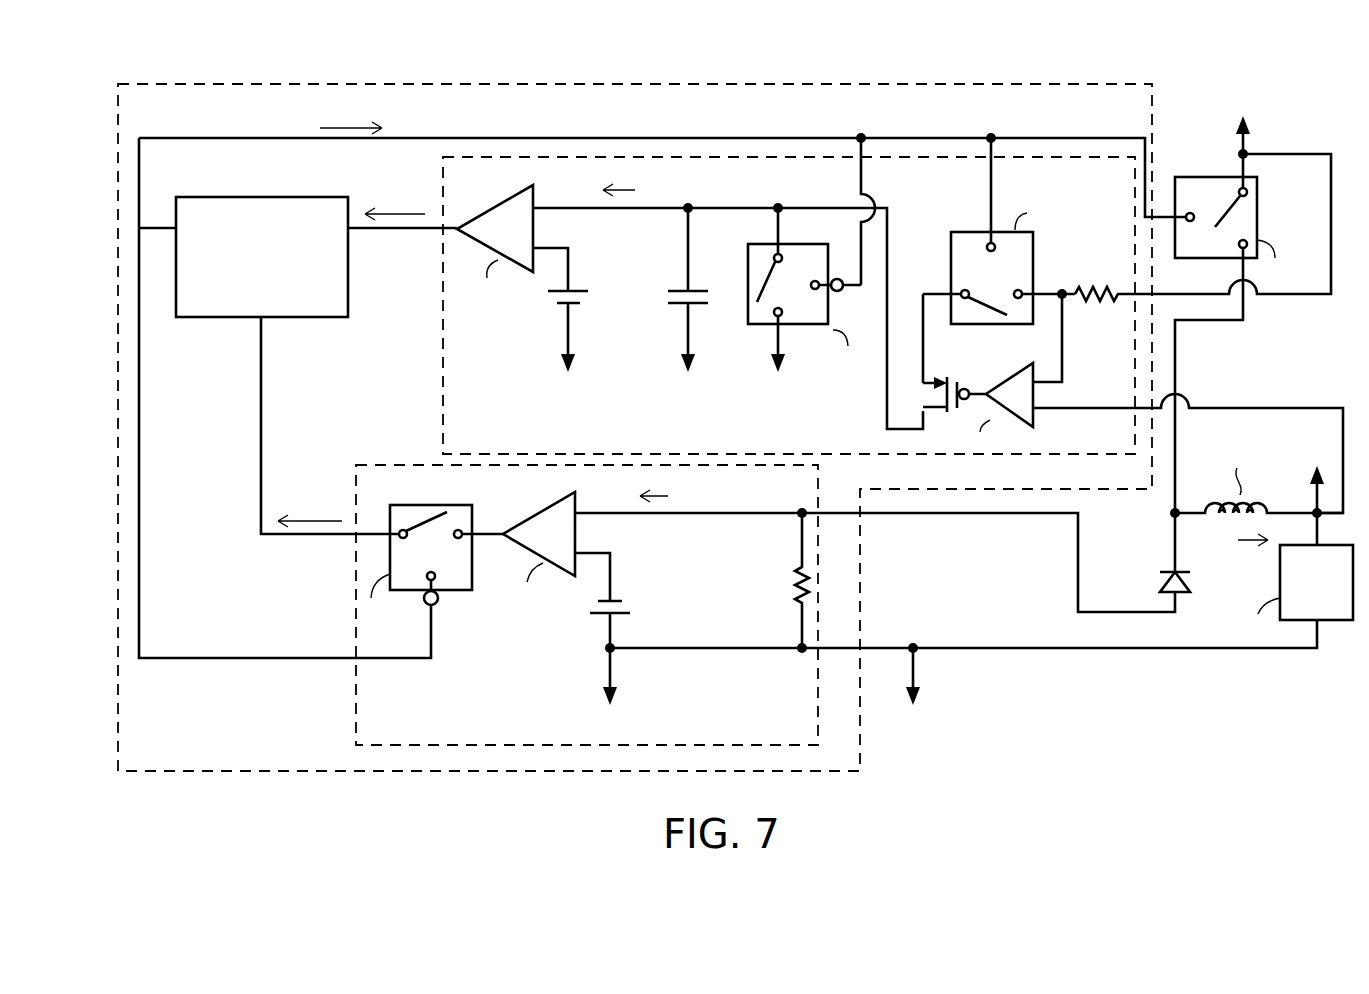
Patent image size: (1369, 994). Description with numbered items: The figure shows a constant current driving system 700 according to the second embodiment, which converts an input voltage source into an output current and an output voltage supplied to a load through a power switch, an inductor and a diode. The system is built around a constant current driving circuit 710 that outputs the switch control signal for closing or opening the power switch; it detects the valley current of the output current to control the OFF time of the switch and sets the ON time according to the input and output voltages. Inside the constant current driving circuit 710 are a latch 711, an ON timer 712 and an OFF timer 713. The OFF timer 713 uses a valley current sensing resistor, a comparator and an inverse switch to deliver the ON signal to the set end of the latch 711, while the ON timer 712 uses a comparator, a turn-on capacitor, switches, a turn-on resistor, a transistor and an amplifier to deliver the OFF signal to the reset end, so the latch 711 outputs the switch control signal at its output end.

The constant current driving system 700 is at (1274, 100).
The constant current driving circuit 710 is at (300, 773).
The latch 711 is at (280, 197).
The ON timer 712 is at (443, 352).
The OFF timer 713 is at (356, 685).